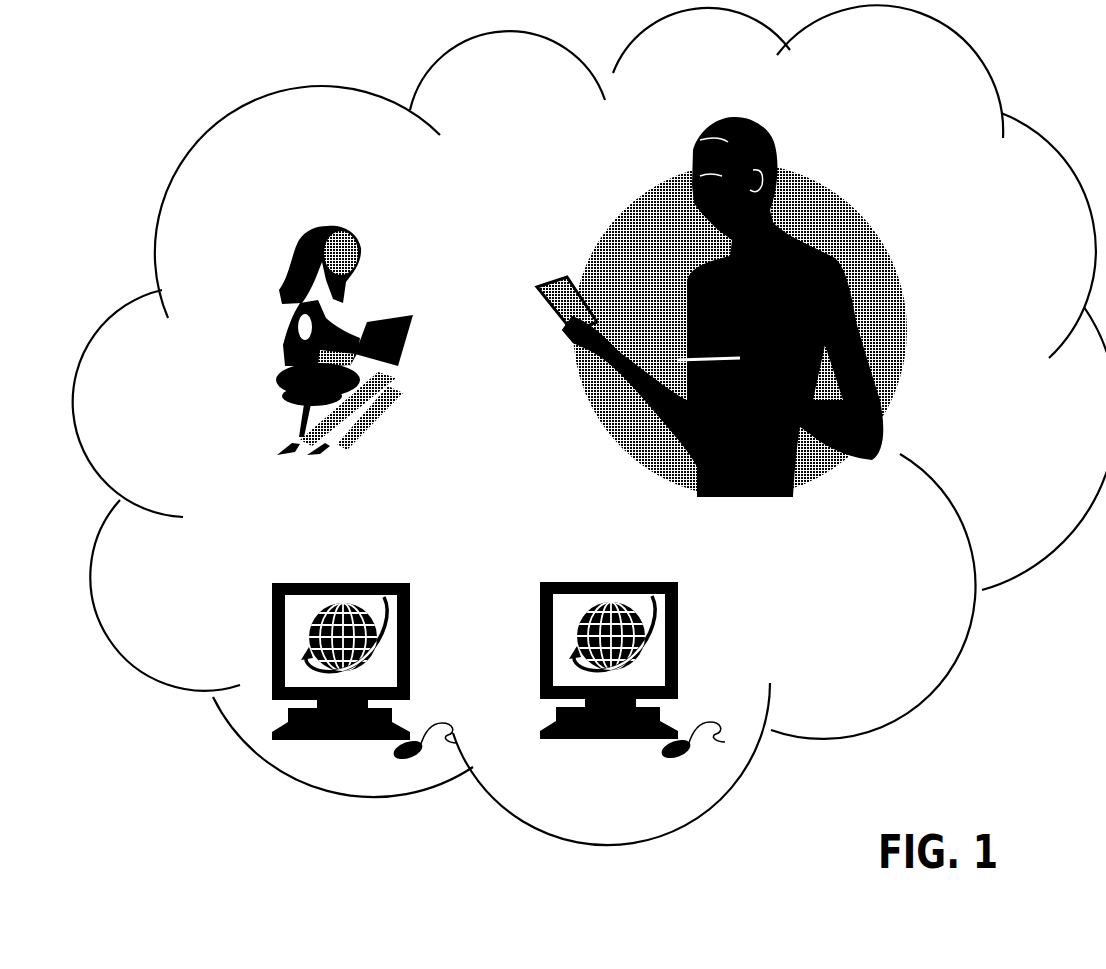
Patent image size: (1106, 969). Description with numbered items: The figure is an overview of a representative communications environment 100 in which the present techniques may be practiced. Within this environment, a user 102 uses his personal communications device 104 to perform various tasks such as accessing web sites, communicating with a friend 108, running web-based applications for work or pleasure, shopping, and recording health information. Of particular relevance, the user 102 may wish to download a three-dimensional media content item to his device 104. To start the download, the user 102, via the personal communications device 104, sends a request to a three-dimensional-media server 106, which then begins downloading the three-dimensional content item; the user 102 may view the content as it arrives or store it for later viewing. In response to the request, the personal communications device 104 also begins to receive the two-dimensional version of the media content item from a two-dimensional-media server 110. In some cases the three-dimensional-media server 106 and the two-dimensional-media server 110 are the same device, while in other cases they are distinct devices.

The communications environment 100 is at (908, 61).
The user 102 is at (822, 238).
The personal communications device 104 is at (520, 293).
The 3D-media server 106 is at (632, 681).
The friend 108 is at (302, 224).
The 2D-media server 110 is at (364, 682).